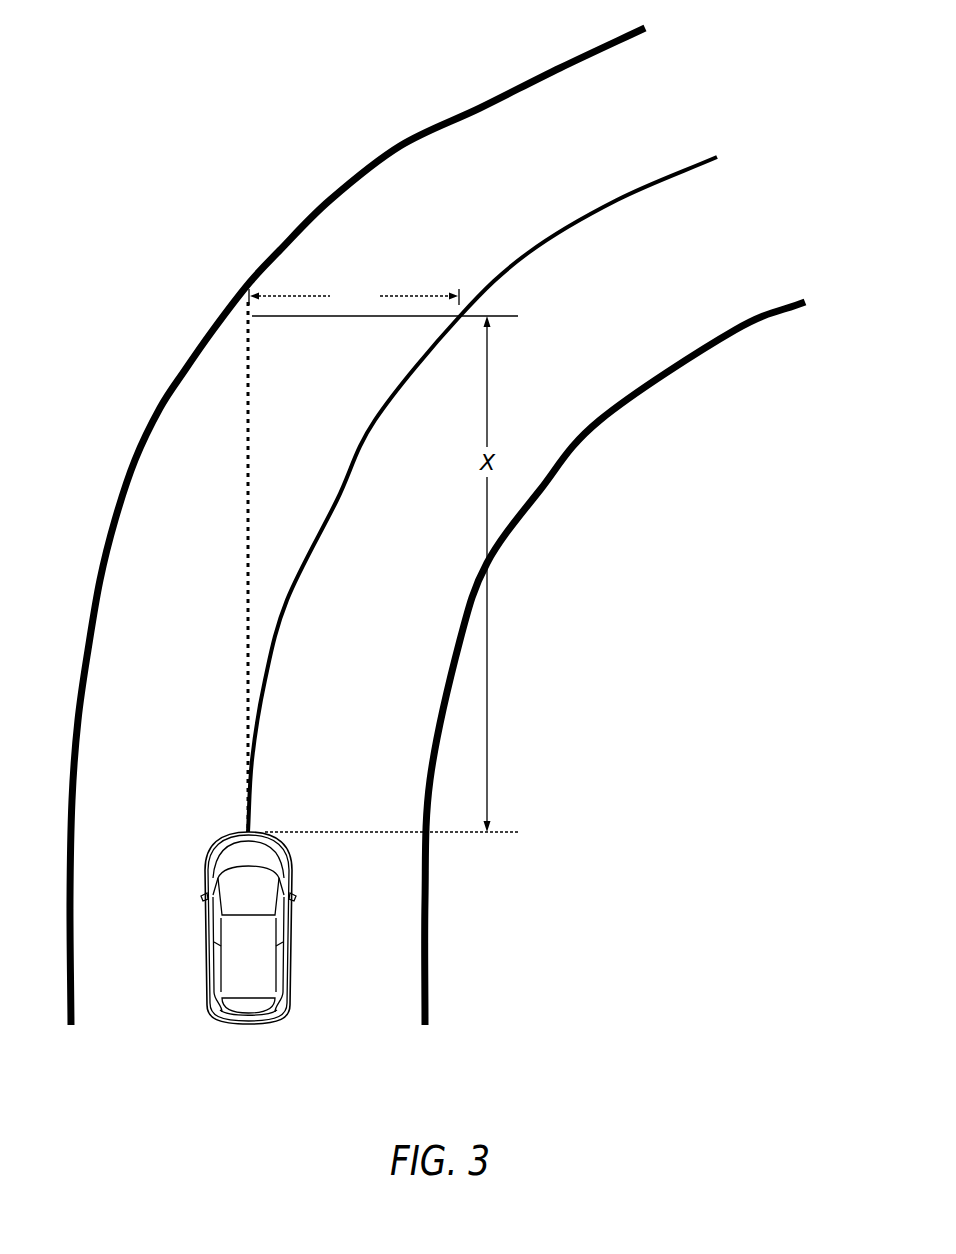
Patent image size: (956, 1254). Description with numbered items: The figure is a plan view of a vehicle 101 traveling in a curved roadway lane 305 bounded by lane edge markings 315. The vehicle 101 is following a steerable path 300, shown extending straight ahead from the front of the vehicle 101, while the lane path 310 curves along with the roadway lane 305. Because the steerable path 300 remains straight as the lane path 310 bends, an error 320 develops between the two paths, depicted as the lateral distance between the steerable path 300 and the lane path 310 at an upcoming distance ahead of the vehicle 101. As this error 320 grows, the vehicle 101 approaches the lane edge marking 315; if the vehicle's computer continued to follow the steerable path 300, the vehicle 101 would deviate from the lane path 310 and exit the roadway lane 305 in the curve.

The vehicle 101 is at (292, 882).
The steerable path 300 is at (248, 396).
The roadway lane 305 is at (147, 993).
The lane path 310 is at (528, 253).
The lane edge marking 315 is at (160, 408).
The error 320 is at (354, 295).